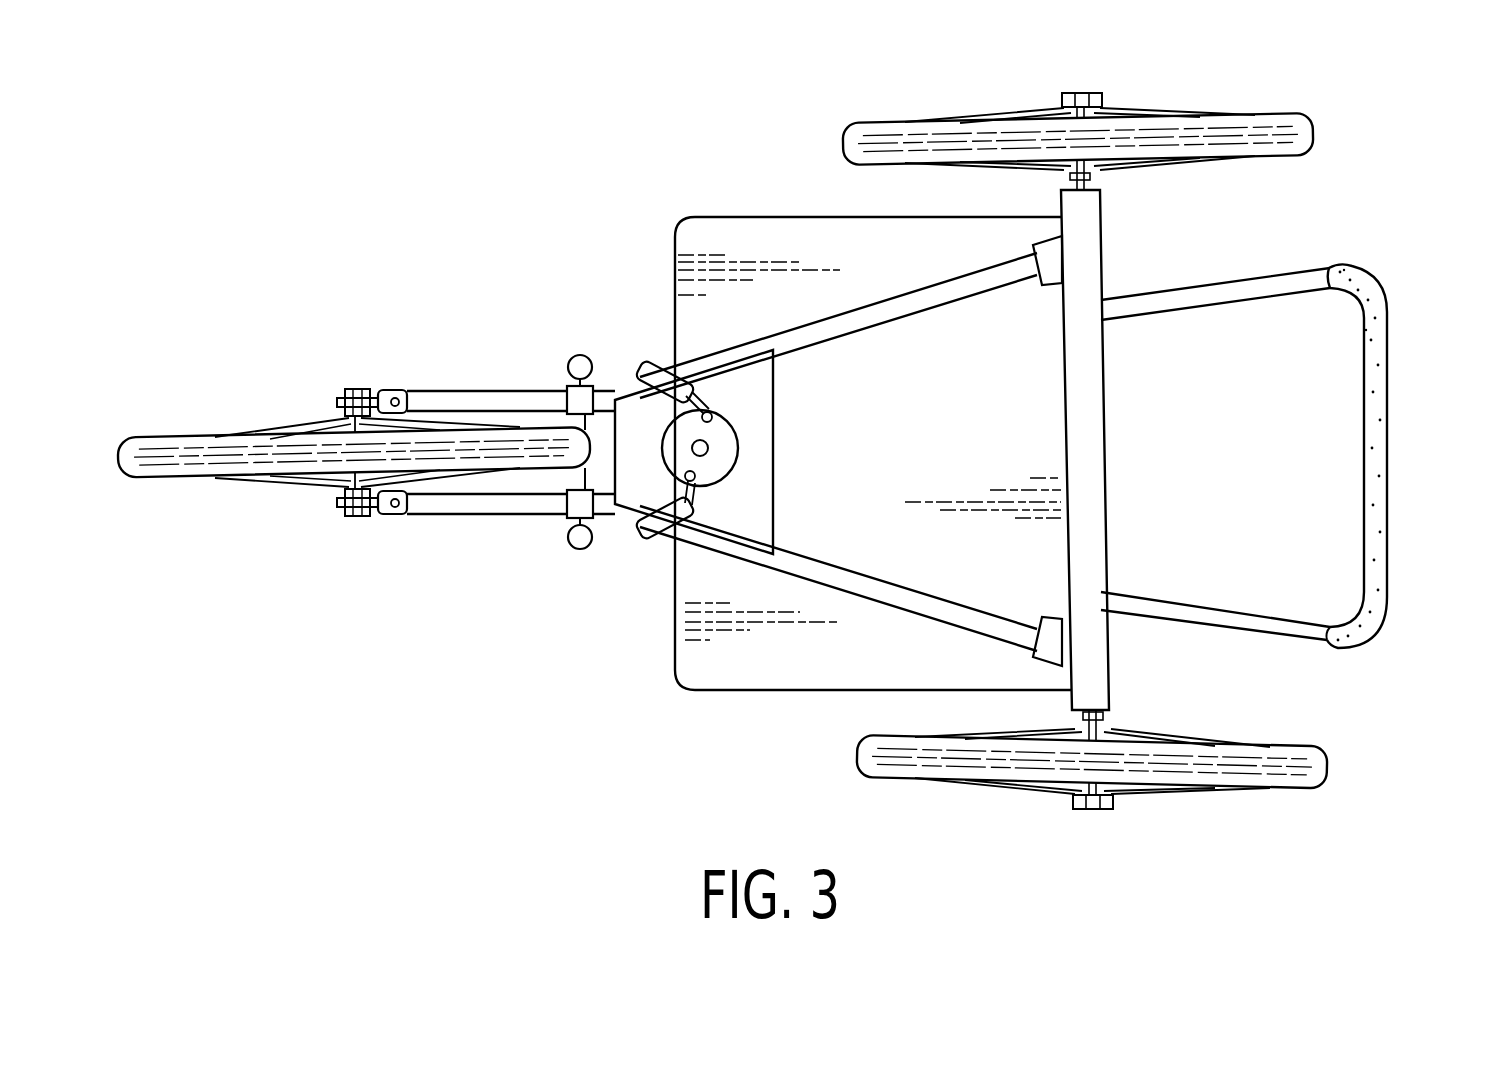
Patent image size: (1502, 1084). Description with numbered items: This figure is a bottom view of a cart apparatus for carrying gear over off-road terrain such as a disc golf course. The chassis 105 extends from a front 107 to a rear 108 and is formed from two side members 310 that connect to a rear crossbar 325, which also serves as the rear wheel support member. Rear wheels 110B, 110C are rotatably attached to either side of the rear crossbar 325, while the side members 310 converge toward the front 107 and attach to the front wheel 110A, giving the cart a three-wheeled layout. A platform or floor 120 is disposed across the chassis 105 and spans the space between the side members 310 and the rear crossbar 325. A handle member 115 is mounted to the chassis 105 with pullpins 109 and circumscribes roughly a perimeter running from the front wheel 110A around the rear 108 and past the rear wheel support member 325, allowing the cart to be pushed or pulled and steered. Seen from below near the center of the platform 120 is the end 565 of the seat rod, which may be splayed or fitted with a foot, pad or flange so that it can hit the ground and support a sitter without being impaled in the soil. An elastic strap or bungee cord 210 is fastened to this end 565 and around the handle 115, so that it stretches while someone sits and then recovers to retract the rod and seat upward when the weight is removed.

The chassis 105 is at (668, 538).
The front 107 is at (455, 514).
The rear 108 is at (922, 600).
The pullpins 109 is at (567, 362).
The front wheel 110A is at (127, 480).
The rear wheel 110B is at (1327, 768).
The rear wheel 110C is at (1302, 143).
The handle member 115 is at (1378, 490).
The platform or floor 120 is at (1005, 385).
The elastic strap or bungee cord 210 is at (655, 362).
The side members 310 is at (900, 298).
The rear crossbar or rear wheel support member 325 is at (1083, 456).
The end or base of rod 565 is at (727, 458).